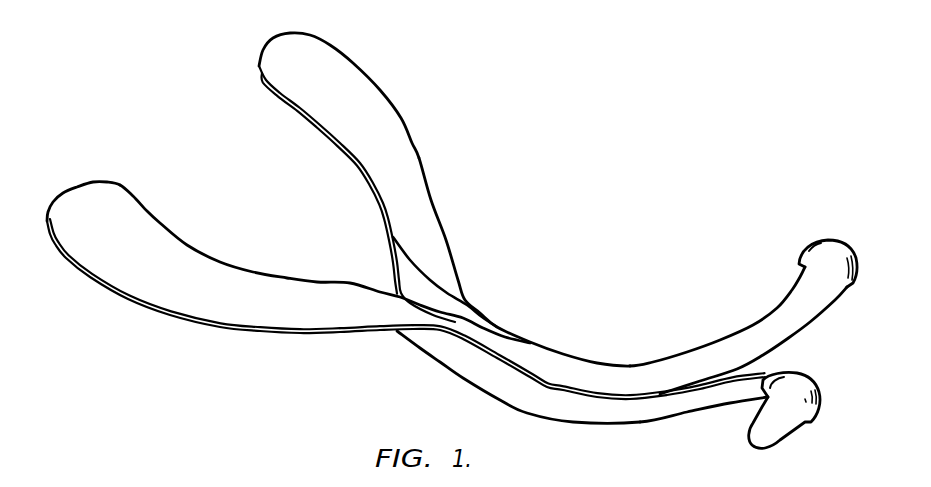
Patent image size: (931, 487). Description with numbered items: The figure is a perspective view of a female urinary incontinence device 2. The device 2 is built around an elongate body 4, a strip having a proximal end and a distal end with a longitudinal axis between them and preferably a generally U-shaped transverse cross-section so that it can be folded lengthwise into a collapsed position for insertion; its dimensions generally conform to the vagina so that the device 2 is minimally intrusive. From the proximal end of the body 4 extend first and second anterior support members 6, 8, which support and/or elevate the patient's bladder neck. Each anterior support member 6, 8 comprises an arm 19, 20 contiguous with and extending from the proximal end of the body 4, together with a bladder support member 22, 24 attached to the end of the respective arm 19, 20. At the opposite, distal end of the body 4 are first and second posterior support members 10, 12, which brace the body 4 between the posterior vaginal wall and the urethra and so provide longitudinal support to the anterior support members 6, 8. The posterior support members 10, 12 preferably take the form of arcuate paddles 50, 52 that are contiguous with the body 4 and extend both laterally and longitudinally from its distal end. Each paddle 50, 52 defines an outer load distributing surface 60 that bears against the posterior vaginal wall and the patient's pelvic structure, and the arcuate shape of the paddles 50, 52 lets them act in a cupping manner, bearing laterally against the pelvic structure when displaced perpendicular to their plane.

The first posterior support member 10 is at (368, 47).
The arcuate paddle 50 is at (415, 155).
The second posterior support member 12 is at (48, 237).
The outer load distributing surface 60 is at (133, 302).
The arcuate paddle 52 is at (297, 312).
The female urinary incontinence device 2 is at (122, 367).
The elongate body 4 is at (543, 424).
The arm 20 is at (717, 402).
The second anterior support member 8 is at (739, 417).
The bladder support member 24 is at (820, 393).
The arm 19 is at (757, 325).
The first anterior support member 6 is at (773, 290).
The bladder support member 22 is at (850, 244).